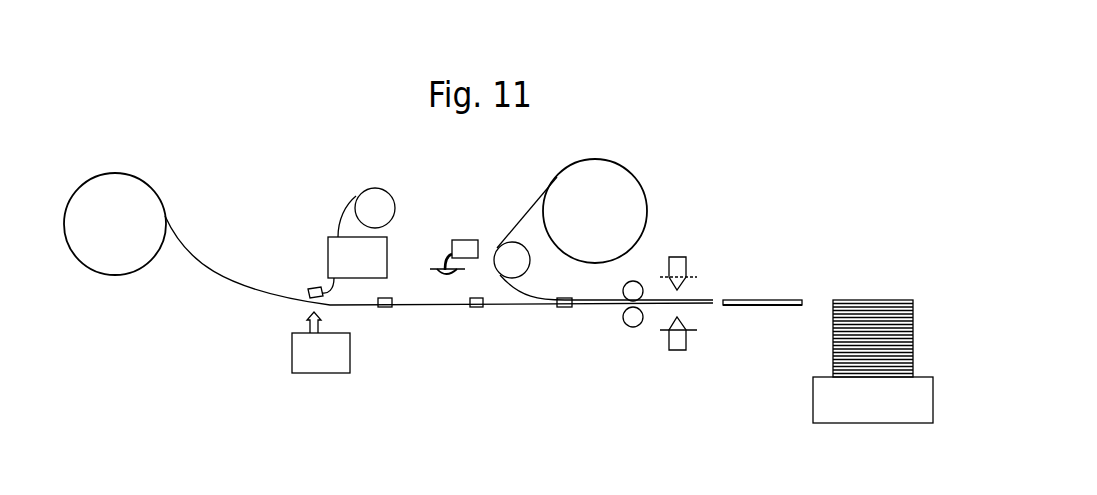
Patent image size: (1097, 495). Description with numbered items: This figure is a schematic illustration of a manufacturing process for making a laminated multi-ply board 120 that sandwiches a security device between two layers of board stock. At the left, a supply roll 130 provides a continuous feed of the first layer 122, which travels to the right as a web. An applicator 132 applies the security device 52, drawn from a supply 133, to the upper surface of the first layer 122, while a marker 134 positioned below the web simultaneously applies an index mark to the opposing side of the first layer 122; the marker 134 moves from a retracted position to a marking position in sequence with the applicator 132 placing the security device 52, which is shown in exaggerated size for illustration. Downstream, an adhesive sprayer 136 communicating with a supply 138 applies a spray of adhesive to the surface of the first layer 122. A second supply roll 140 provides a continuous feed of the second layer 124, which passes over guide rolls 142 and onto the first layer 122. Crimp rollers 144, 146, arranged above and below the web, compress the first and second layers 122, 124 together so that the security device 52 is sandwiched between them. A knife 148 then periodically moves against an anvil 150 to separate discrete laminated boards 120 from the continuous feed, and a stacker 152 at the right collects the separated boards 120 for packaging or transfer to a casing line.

The security device 52 is at (308, 290).
The laminated multi-ply board 120 is at (778, 300).
The first layer 122 is at (266, 303).
The second layer 124 is at (532, 200).
The supply roll 130 is at (122, 192).
The applicator 132 is at (332, 247).
The supply 133 is at (378, 203).
The marker 134 is at (330, 365).
The adhesive sprayer 136 is at (443, 268).
The supply 138 is at (462, 240).
The second supply roll 140 is at (617, 190).
The guide rolls 142 is at (517, 262).
The crimp roller 144 is at (634, 283).
The crimp roller 146 is at (634, 325).
The knife 148 is at (678, 257).
The anvil 150 is at (690, 320).
The stacker 152 is at (827, 397).